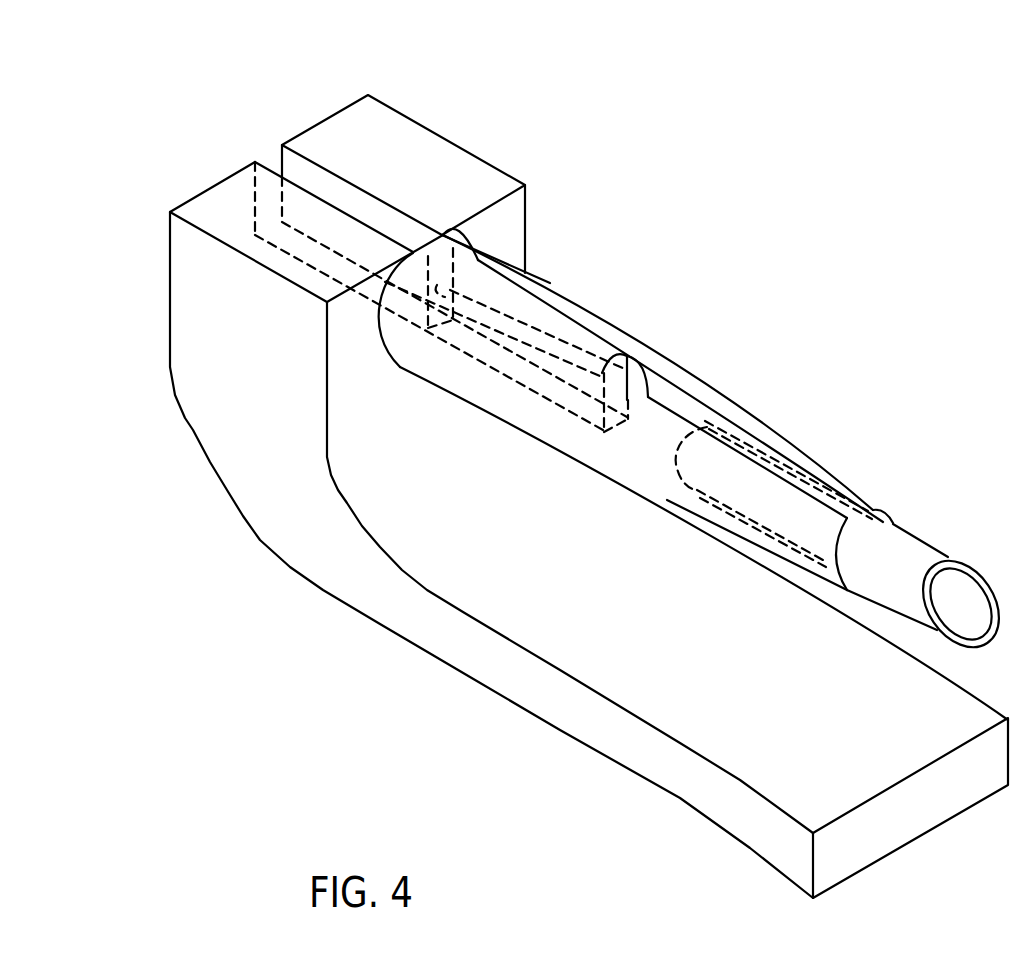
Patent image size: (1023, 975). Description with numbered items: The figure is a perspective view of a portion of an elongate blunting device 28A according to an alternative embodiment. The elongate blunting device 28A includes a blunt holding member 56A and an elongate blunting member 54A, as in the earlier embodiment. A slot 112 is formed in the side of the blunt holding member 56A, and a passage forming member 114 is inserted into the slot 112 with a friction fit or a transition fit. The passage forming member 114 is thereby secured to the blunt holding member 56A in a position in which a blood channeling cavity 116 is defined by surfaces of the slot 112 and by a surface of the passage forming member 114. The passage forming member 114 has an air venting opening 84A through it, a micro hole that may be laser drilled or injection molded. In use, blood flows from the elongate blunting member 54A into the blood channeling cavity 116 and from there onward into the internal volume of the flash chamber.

The elongate blunting device 28A is at (454, 103).
The slot 112 is at (413, 240).
The passage forming member 114 is at (533, 313).
The air venting opening 84A is at (640, 395).
The blunt holding member 56A is at (707, 355).
The blood channeling cavity 116 is at (700, 403).
The elongate blunting member 54A is at (897, 553).